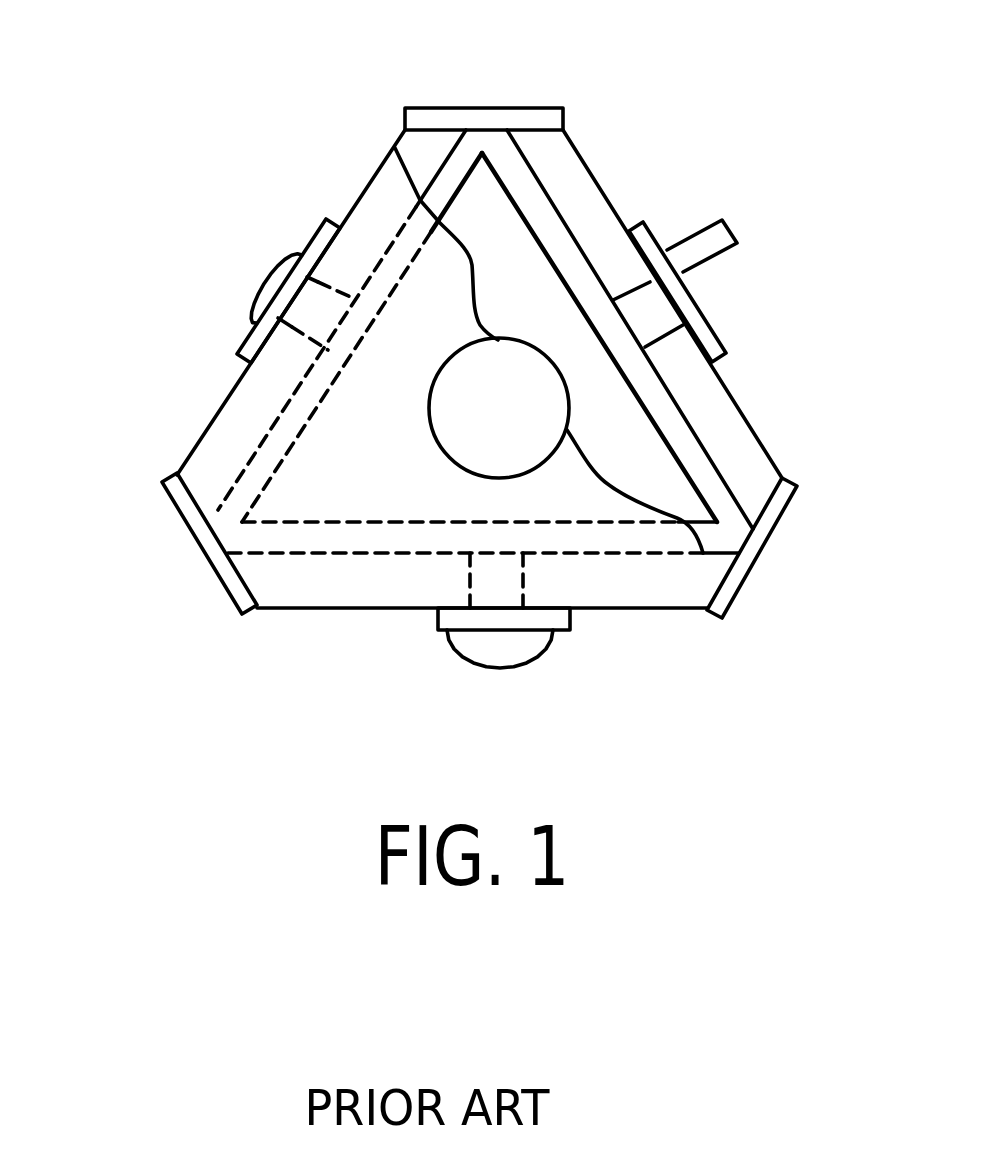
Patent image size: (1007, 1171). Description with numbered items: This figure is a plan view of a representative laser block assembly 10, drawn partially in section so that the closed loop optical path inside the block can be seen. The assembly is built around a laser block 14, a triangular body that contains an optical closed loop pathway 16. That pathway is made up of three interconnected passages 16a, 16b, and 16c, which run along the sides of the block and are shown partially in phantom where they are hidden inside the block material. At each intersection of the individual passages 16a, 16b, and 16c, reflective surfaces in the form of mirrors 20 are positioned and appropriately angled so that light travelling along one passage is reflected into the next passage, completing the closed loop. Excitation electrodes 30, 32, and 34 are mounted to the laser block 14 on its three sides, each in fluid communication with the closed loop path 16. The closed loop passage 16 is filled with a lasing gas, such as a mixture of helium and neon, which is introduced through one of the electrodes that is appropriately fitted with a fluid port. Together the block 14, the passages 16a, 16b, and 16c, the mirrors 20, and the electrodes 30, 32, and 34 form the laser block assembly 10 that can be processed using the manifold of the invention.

The laser block assembly 10 is at (752, 98).
The laser block 14 is at (210, 423).
The optical closed loop pathway 16 is at (565, 173).
The passage 16a is at (262, 560).
The passage 16b is at (717, 455).
The passage 16c is at (448, 157).
The mirrors 20 is at (488, 108).
The excitation electrode 30 is at (438, 628).
The excitation electrode 32 is at (733, 356).
The excitation electrode 34 is at (240, 342).